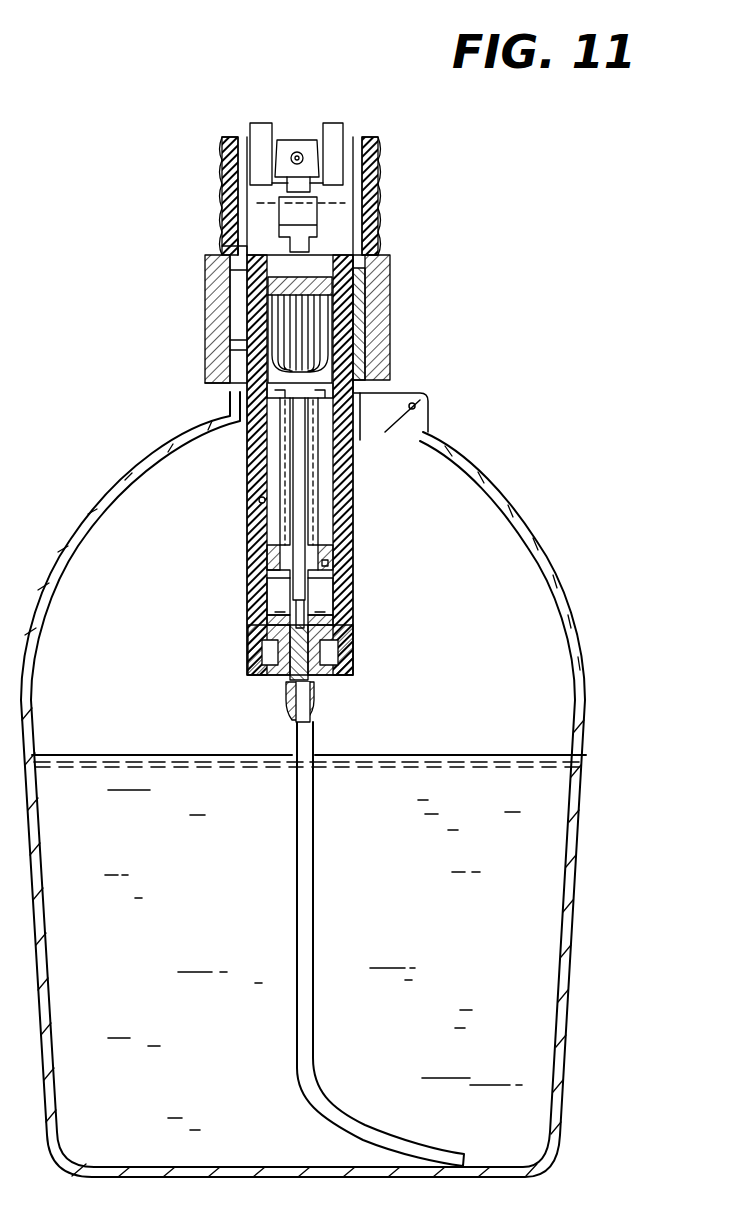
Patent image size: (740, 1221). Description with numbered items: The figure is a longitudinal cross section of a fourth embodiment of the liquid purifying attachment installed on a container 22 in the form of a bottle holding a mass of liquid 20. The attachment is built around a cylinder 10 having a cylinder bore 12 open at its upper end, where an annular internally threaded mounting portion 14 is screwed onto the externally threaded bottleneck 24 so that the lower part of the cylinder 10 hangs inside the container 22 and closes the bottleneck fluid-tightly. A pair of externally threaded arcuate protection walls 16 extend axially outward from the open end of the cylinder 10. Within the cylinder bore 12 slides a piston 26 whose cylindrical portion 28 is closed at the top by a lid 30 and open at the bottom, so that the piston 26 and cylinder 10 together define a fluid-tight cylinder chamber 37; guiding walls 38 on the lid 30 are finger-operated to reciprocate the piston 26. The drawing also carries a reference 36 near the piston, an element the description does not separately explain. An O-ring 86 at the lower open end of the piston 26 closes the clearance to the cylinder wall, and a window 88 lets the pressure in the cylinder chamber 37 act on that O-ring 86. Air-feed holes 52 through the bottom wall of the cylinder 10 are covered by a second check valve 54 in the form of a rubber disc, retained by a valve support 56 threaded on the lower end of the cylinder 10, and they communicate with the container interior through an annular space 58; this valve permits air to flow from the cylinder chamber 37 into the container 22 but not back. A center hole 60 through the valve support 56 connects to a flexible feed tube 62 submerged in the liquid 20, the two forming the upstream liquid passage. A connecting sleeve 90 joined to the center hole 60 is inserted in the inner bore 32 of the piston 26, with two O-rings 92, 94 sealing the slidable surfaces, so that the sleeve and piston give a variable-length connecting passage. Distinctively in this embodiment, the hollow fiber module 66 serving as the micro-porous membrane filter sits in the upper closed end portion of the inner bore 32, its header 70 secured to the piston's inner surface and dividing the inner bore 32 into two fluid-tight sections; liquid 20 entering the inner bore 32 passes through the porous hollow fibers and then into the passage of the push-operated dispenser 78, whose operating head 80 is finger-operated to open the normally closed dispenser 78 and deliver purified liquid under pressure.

The cylinder 10 is at (350, 452).
The cylinder bore 12 is at (258, 506).
The mounting portion 14 is at (206, 327).
The protection walls 16 is at (225, 170).
The liquid 20 is at (226, 932).
The container 22 is at (586, 806).
The bottleneck 24 is at (372, 295).
The piston 26 is at (345, 205).
The cylindrical portion 28 is at (345, 342).
The lid 30 is at (260, 190).
The inner bore 32 is at (244, 366).
The shoulder 36 is at (236, 246).
The cylinder chamber 37 is at (268, 585).
The guiding walls 38 is at (258, 120).
The air-feed holes 52 is at (270, 614).
The second check valve 54 is at (250, 643).
The valve support 56 is at (350, 638).
The annular space 58 is at (258, 672).
The center hole 60 is at (318, 681).
The feed tube 62 is at (315, 797).
The hollow fiber module 66 is at (268, 302).
The header 70 is at (335, 288).
The push-operated type dispenser 78 is at (318, 225).
The operating head 80 is at (290, 138).
The O-ring 86 is at (330, 562).
The window 88 is at (320, 590).
The connecting sleeve 90 is at (318, 488).
The O-ring 92 is at (275, 398).
The O-ring 94 is at (272, 558).